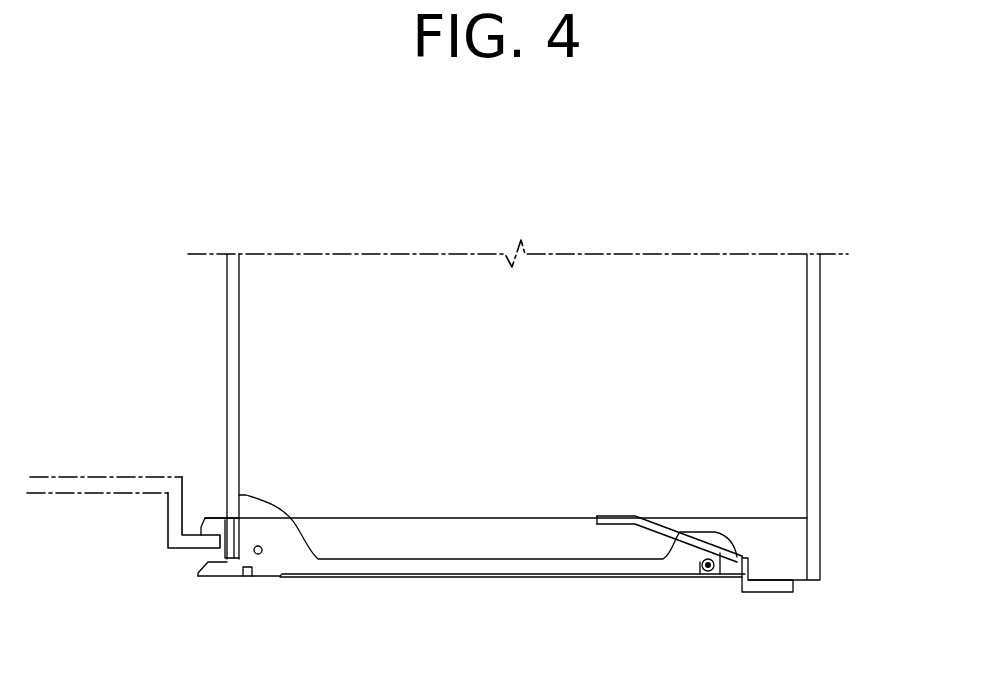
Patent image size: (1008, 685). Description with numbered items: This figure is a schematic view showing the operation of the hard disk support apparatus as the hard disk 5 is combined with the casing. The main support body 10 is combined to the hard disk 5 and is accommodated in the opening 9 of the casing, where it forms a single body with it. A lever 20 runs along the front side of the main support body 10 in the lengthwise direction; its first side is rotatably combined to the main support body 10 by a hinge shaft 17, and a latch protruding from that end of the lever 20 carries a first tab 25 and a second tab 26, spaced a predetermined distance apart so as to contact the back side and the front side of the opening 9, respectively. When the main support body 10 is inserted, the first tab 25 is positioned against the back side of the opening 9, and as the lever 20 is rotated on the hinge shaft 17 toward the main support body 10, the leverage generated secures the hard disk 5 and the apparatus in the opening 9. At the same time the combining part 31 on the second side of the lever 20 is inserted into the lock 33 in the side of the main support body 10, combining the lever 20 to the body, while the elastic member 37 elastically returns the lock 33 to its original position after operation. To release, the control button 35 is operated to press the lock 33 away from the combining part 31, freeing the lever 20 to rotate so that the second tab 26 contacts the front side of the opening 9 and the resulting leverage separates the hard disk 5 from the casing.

The hard disk 5 is at (792, 384).
The opening 9 is at (194, 554).
The main support body 10 is at (510, 548).
The hinge shaft 17 is at (263, 557).
The lever 20 is at (428, 572).
The first tab 25 is at (195, 565).
The second tab 26 is at (233, 578).
The combining part 31 is at (706, 572).
The lock 33 is at (712, 571).
The control button 35 is at (772, 592).
The elastic member 37 is at (665, 572).